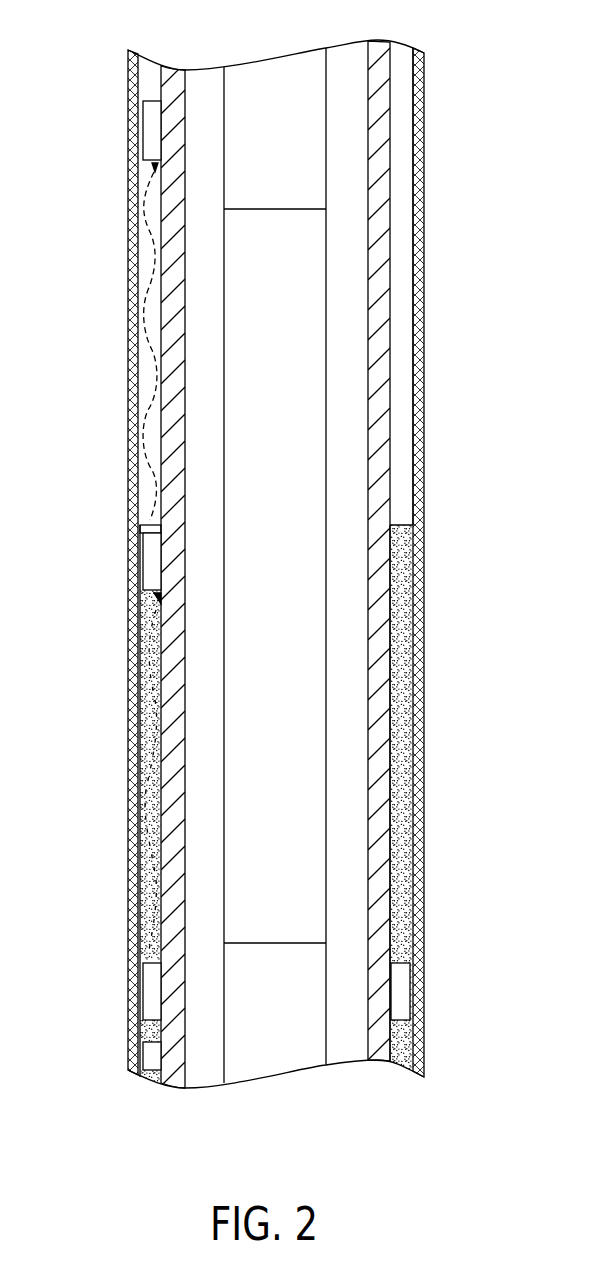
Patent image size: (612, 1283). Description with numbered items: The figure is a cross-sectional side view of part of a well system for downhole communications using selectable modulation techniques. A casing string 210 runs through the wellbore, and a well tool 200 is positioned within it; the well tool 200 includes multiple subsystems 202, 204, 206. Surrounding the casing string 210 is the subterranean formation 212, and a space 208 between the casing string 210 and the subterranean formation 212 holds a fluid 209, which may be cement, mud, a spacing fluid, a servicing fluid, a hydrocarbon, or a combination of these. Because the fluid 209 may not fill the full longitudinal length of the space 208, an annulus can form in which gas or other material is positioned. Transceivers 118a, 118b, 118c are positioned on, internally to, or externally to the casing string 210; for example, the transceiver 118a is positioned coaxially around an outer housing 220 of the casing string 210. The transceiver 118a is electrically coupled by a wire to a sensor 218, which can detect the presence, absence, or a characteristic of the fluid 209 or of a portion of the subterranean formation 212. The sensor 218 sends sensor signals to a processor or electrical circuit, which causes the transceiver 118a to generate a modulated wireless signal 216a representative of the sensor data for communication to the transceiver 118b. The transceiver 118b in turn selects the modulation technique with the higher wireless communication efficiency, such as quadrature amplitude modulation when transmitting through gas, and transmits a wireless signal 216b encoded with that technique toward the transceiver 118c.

The well tool 200 is at (311, 57).
The subsystem 202 is at (243, 68).
The subsystem 204 is at (297, 1060).
The subsystem 206 is at (308, 707).
The space 208 is at (400, 317).
The fluid 209 is at (404, 770).
The casing string 210 is at (380, 420).
The subterranean formation 212 is at (416, 600).
The sensor 218 is at (143, 1052).
The outer housing 220 is at (393, 853).
The transceiver 118a is at (143, 1000).
The transceiver 118b is at (143, 560).
The transceiver 118c is at (143, 133).
The wireless signal 216a is at (128, 860).
The wireless signal 216b is at (128, 335).